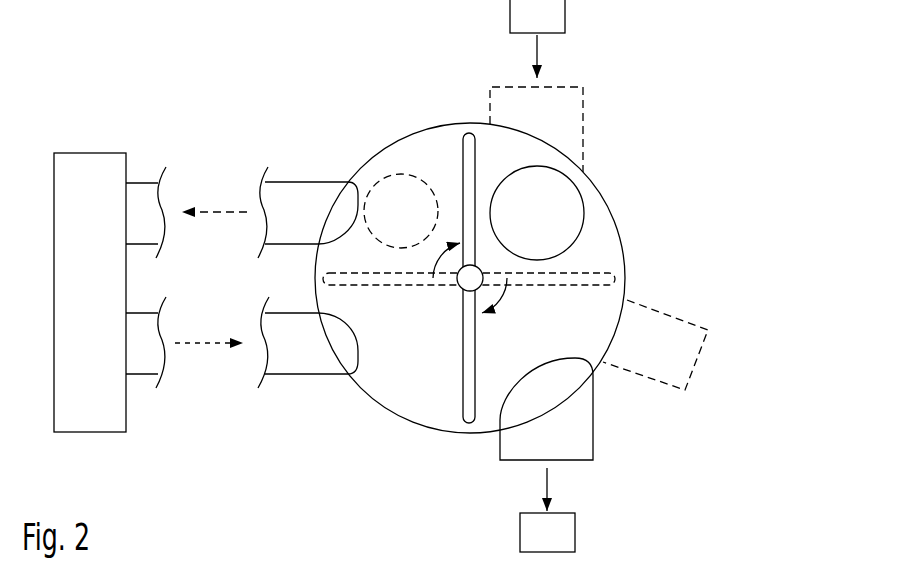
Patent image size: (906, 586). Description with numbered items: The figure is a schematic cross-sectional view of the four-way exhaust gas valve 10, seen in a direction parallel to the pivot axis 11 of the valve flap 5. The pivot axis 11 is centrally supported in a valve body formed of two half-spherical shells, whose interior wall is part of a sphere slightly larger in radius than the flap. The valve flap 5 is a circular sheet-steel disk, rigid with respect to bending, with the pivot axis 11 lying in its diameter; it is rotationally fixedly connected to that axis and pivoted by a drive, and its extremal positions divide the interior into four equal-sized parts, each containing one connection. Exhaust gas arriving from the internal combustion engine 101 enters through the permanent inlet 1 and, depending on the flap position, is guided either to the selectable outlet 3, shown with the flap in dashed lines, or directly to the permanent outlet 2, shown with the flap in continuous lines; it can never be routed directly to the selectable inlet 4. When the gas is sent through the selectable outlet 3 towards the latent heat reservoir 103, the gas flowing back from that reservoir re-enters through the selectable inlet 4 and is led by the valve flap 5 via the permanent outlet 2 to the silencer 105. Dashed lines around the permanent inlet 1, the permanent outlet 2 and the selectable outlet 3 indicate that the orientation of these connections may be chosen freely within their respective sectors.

The permanent inlet 1 is at (583, 132).
The permanent outlet 2 is at (650, 378).
The selectable outlet 3 is at (378, 182).
The selectable inlet 4 is at (295, 376).
The valve flap 5 is at (463, 381).
The four-way exhaust gas valve 10 is at (722, 240).
The pivot axis 11 is at (466, 284).
The internal combustion engine 101 is at (552, 28).
The latent heat reservoir 103 is at (75, 307).
The silencer 105 is at (562, 546).